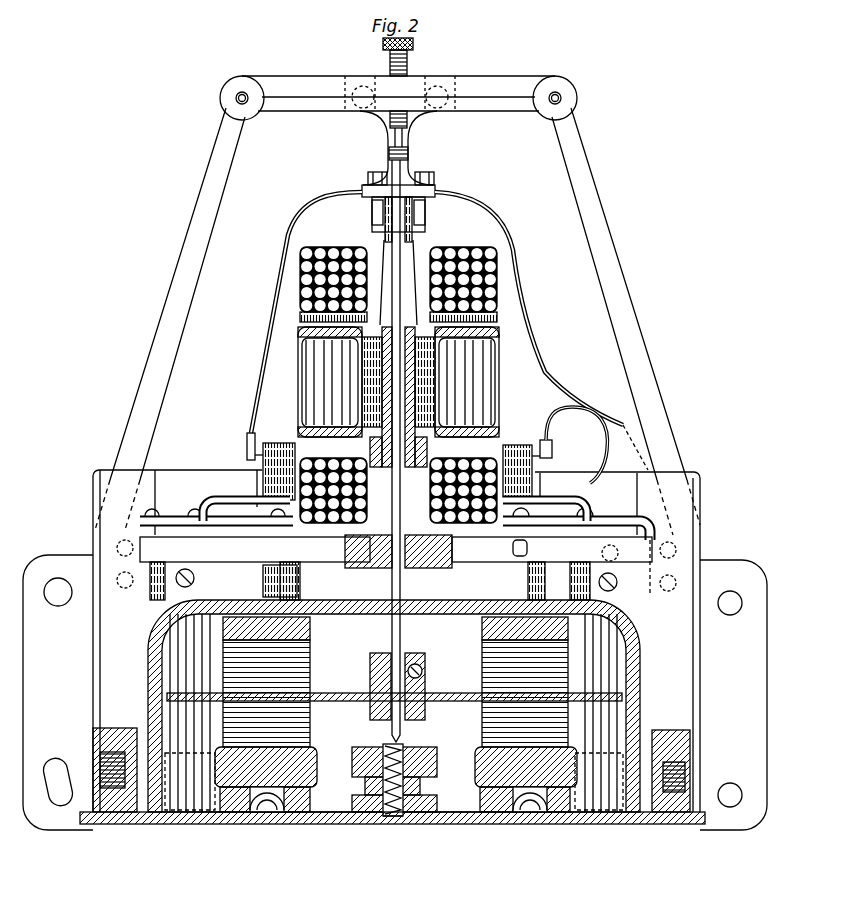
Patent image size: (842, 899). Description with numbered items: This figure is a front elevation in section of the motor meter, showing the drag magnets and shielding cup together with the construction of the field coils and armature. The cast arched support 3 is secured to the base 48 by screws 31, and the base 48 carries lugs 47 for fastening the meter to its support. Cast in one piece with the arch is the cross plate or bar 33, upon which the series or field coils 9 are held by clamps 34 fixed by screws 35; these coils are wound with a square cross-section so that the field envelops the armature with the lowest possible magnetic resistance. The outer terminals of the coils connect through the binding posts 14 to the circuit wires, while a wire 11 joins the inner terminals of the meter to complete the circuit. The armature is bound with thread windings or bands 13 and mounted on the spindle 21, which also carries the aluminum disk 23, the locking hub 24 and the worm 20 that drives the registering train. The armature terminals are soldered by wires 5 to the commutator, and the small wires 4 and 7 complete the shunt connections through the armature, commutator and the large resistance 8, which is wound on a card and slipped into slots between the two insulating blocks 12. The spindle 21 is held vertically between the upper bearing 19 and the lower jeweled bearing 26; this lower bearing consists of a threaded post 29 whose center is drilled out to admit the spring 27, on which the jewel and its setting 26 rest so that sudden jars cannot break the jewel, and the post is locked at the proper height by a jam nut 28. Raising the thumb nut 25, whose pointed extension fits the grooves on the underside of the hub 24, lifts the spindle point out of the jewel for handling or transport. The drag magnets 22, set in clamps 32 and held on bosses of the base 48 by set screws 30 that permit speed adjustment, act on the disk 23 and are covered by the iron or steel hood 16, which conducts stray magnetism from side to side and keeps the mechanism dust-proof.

The arched support 3 is at (396, 444).
The small wires 4 is at (277, 286).
The wires 5 is at (420, 252).
The small wire 7 is at (570, 445).
The resistance 8 is at (282, 445).
The series or field-coils 9 is at (322, 255).
The wire 11 is at (241, 498).
The insulating-blocks 12 is at (395, 536).
The windings or bands 13 is at (298, 406).
The binding-posts 14 is at (196, 582).
The hood 16 is at (336, 602).
The upper bearing 19 is at (414, 45).
The worm 20 is at (399, 130).
The spindle 21 is at (400, 639).
The drag-magnets 22 is at (301, 654).
The aluminum disk 23 is at (350, 701).
The locking-hub 24 is at (420, 703).
The thumb-nut 25 is at (420, 752).
The lower jeweled bearing 26 is at (404, 766).
The spring 27 is at (421, 788).
The jam-nut 28 is at (365, 786).
The threaded post 29 is at (393, 817).
The set-screws 30 is at (268, 814).
The screws 31 is at (115, 822).
The clamps 32 is at (318, 751).
The cross plate or bar 33 is at (266, 567).
The clamps 34 is at (500, 540).
The screws 35 is at (528, 548).
The lugs 47 is at (395, 692).
The base 48 is at (450, 824).